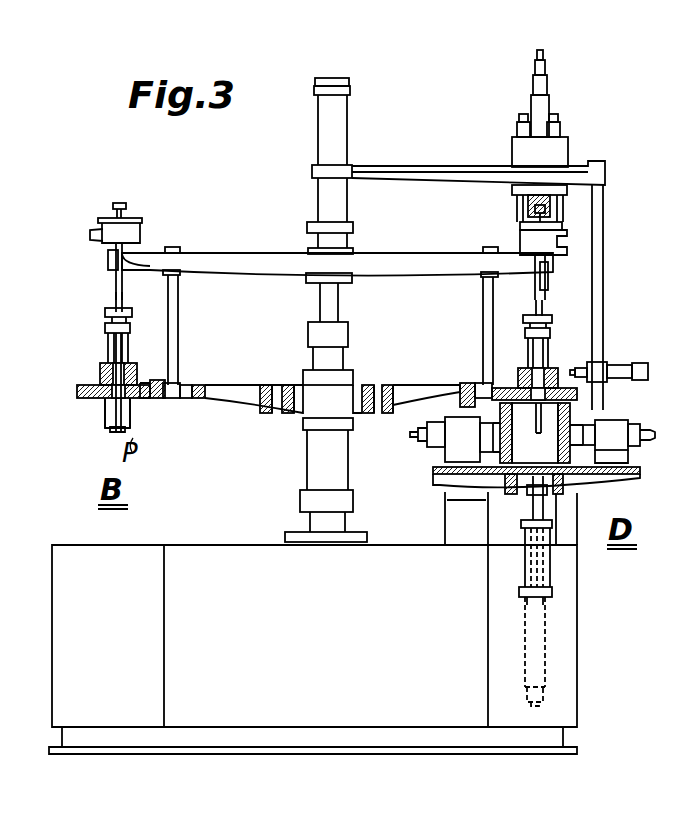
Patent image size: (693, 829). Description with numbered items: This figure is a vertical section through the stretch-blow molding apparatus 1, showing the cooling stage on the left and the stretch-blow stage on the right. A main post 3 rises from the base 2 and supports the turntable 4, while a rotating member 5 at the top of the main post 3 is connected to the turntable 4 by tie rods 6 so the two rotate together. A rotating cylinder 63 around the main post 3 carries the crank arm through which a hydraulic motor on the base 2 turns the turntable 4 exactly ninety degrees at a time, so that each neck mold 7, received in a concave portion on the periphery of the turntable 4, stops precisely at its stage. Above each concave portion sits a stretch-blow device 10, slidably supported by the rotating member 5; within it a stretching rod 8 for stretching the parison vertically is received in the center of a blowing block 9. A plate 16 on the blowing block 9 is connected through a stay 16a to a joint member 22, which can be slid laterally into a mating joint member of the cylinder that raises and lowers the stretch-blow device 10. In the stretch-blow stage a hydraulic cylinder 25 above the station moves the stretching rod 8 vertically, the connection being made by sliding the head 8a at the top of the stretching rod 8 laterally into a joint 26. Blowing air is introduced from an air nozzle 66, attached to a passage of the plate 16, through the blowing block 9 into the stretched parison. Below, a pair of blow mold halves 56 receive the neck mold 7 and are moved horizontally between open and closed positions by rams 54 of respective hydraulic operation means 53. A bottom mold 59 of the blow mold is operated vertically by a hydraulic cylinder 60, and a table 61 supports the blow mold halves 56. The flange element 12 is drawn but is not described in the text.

The apparatus 1 is at (410, 162).
The base 2 is at (212, 545).
The main post 3 is at (335, 298).
The turntable 4 is at (232, 385).
The rotating member 5 is at (220, 253).
The tie rods 6 is at (178, 298).
The neck mold 7 is at (100, 415).
The stretching rod 8 is at (130, 340).
The head 8a is at (545, 210).
The blowing block 9 is at (100, 378).
The stretch-blow device 10 is at (112, 298).
The flange 12 is at (80, 393).
The plate 16 is at (105, 365).
The stay 16a is at (122, 268).
The joint member 22 is at (520, 243).
The hydraulic cylinder 25 is at (560, 150).
The joint 26 is at (520, 212).
The hydraulic operation means 53 is at (430, 437).
The rams 54 is at (470, 480).
The blow mold halves 56 is at (515, 485).
The bottom mold 59 is at (530, 528).
The hydraulic cylinder 60 is at (540, 630).
The table 61 is at (440, 488).
The rotating cylinder 63 is at (308, 458).
The air nozzle 66 is at (578, 365).